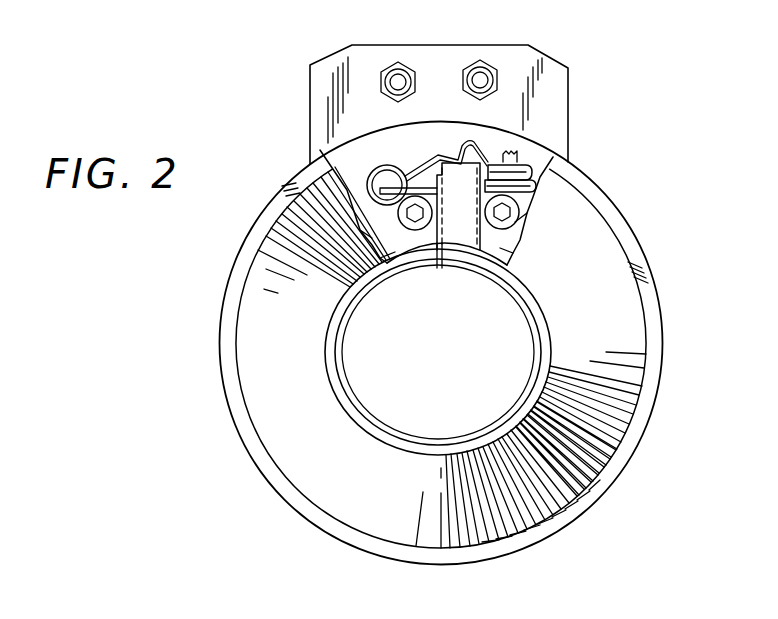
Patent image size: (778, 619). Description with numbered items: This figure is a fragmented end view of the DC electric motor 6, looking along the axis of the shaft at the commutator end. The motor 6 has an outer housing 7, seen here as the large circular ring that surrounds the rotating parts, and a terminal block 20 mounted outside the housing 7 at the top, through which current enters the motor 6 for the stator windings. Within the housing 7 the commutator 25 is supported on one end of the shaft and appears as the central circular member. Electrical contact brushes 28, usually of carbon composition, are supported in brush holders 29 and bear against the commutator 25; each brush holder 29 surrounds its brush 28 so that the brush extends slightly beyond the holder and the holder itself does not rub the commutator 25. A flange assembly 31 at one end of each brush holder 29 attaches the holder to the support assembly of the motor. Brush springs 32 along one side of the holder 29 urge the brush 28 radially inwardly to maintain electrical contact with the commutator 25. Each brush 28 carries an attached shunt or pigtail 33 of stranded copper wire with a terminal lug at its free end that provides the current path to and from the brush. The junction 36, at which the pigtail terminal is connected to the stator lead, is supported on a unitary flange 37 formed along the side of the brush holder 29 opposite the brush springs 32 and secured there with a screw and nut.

The DC electric motor 6 is at (292, 519).
The outer housing 7 is at (625, 464).
The terminal block 20 is at (428, 58).
The commutator 25 is at (469, 265).
The electrical contact brushes 28 is at (378, 258).
The brush holders 29 is at (516, 252).
The flange assembly 31 is at (403, 224).
The brush springs 32 is at (405, 170).
The pigtail 33 is at (481, 137).
The junction 36 is at (548, 166).
The flange 37 is at (536, 194).